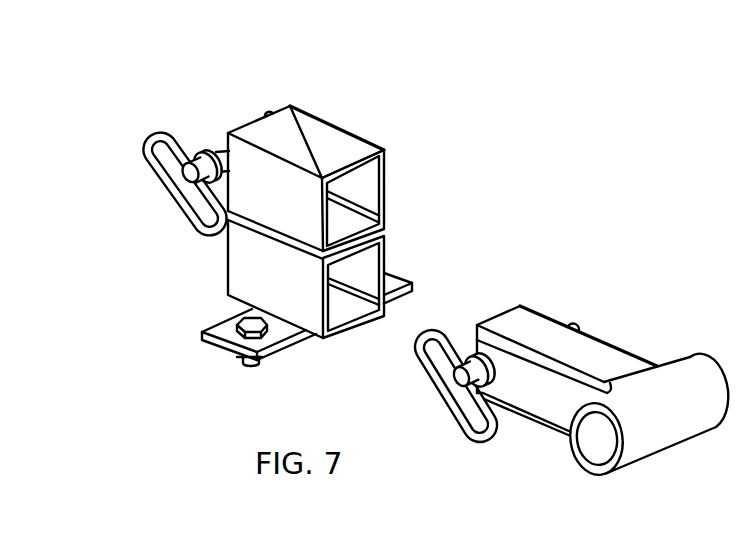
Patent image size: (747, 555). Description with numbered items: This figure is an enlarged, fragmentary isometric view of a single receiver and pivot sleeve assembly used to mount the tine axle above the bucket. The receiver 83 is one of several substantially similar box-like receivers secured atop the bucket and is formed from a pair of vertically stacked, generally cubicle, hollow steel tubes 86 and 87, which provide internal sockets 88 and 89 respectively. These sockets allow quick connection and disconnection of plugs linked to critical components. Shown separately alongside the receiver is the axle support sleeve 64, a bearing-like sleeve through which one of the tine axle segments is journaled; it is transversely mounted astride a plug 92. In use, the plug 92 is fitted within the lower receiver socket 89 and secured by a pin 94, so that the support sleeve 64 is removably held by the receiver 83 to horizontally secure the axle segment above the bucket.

The axle support sleeve 64 is at (682, 415).
The receiver 83 is at (265, 203).
The hollow steel tube 86 is at (265, 182).
The hollow steel tube 87 is at (275, 283).
The internal socket 88 is at (347, 227).
The internal socket 89 is at (347, 298).
The plug 92 is at (538, 392).
The pin 94 is at (428, 388).